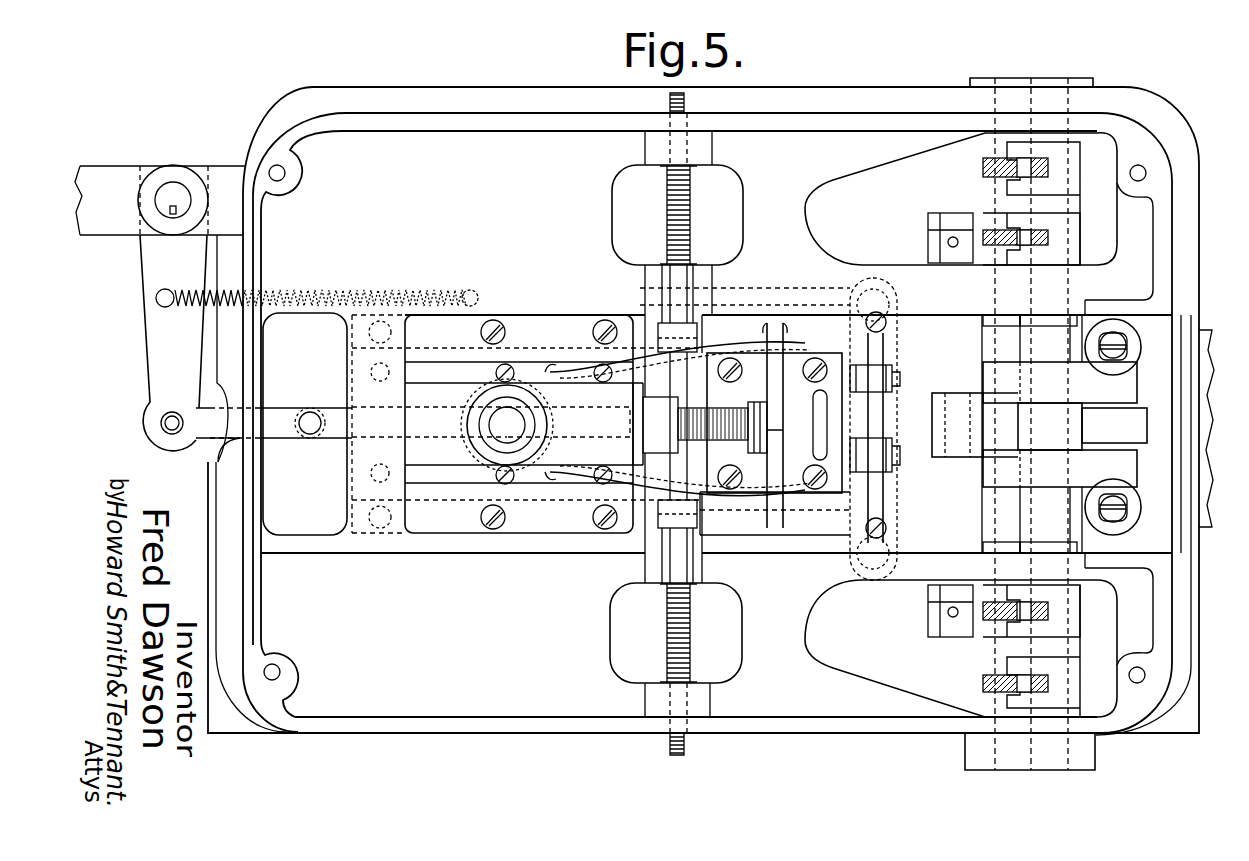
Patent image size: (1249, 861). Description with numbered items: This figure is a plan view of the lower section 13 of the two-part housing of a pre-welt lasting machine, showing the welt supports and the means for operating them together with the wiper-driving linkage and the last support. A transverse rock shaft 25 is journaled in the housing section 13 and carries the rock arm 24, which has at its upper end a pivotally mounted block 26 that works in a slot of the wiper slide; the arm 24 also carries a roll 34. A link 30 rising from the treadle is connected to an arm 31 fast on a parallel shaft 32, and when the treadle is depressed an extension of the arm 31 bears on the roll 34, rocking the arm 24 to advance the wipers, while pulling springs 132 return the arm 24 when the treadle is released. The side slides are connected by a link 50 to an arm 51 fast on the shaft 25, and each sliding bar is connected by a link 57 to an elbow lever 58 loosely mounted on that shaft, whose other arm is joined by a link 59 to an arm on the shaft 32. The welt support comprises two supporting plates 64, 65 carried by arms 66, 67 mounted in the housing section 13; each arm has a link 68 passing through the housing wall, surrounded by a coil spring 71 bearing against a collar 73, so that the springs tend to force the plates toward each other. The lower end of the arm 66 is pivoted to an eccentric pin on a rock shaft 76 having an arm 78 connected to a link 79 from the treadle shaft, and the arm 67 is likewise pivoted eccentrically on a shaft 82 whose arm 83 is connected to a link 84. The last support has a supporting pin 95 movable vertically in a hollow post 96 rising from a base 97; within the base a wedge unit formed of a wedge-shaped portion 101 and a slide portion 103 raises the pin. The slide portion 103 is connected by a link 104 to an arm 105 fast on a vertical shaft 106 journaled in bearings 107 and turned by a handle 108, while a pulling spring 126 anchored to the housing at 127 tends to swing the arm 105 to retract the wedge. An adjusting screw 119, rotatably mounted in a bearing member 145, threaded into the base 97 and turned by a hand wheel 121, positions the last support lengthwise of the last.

The lower section of the housing 13 is at (1165, 232).
The rock arm 24 is at (1070, 390).
The rock shaft 25 is at (1064, 326).
The pivotally mounted block 26 is at (1045, 430).
The link 30 is at (938, 420).
The arm 31 is at (957, 385).
The shaft 32 is at (1004, 326).
The roll 34 is at (1130, 420).
The link 50 is at (985, 163).
The arm 51 is at (1040, 148).
The link 57 is at (1049, 238).
The elbow lever 58 is at (985, 213).
The link 59 is at (930, 236).
The welt-supporting plate 64 is at (712, 358).
The welt-supporting plate 65 is at (773, 530).
The arm 66 is at (657, 330).
The arm 67 is at (660, 518).
The link 68 is at (668, 242).
The coil spring 71 is at (666, 203).
The collar 73 is at (692, 165).
The rock shaft 76 is at (803, 313).
The arm 78 is at (890, 366).
The link 79 is at (901, 381).
The shaft 82 is at (798, 540).
The arm 83 is at (882, 480).
The link 84 is at (887, 456).
The supporting pin 95 is at (505, 428).
The hollow post 96 is at (522, 462).
The base 97 is at (572, 480).
The wedge-shaped portion 101 is at (600, 470).
The slide portion 103 is at (330, 432).
The link 104 is at (194, 440).
The arm 105 is at (142, 350).
The vertical shaft 106 is at (173, 187).
The bearings 107 is at (208, 168).
The handle 108 is at (106, 175).
The adjusting screw 119 is at (686, 408).
The hand wheel 121 is at (826, 400).
The pulling spring 126 is at (195, 292).
The anchor point 127 is at (473, 292).
The pulling spring 132 is at (1122, 334).
The bearing member 145 is at (752, 410).